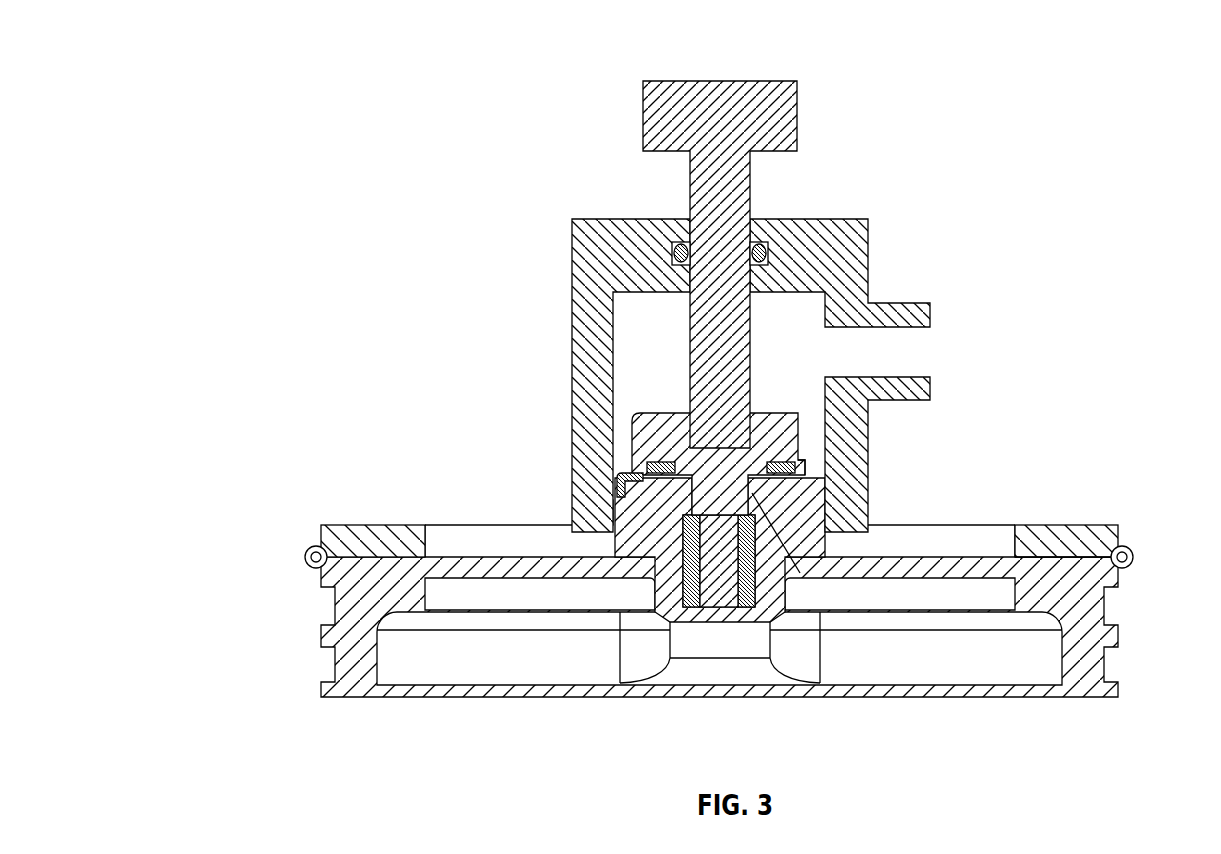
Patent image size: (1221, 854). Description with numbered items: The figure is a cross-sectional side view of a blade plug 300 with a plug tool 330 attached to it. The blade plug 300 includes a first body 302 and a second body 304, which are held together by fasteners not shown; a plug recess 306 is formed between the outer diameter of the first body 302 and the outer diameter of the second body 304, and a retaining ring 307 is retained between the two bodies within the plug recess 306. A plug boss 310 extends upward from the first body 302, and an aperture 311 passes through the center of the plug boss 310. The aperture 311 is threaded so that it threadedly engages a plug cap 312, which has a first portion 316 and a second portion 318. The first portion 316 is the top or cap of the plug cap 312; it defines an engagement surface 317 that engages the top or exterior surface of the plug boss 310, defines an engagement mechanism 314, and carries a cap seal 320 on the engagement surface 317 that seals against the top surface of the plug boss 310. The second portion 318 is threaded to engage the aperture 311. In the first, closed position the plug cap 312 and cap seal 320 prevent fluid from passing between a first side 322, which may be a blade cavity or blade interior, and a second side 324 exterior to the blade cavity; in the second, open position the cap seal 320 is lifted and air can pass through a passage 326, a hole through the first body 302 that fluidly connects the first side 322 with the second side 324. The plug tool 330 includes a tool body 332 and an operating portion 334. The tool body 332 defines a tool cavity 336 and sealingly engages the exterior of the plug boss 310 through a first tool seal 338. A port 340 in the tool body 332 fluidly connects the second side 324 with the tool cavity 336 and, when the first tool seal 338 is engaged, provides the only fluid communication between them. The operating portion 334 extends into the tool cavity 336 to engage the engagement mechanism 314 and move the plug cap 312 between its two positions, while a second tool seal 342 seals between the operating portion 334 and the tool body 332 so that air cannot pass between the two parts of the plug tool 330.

The blade plug 300 is at (328, 478).
The first body 302 is at (761, 636).
The second body 304 is at (1068, 525).
The plug recess 306 is at (1113, 539).
The retaining ring 307 is at (304, 556).
The plug boss 310 is at (615, 540).
The aperture 311 is at (680, 615).
The plug cap 312 is at (714, 430).
The engagement mechanism 314 is at (685, 435).
The first portion 316 is at (801, 452).
The engagement surface 317 is at (643, 470).
The second portion 318 is at (747, 639).
The cap seal 320 is at (790, 478).
The first side 322 is at (989, 746).
The second side 324 is at (1106, 361).
The passage 326 is at (800, 573).
The plug tool 330 is at (487, 42).
The tool body 332 is at (839, 345).
The operating portion 334 is at (643, 105).
The tool cavity 336 is at (677, 319).
The first tool seal 338 is at (841, 502).
The port 340 is at (927, 347).
The second tool seal 342 is at (761, 244).